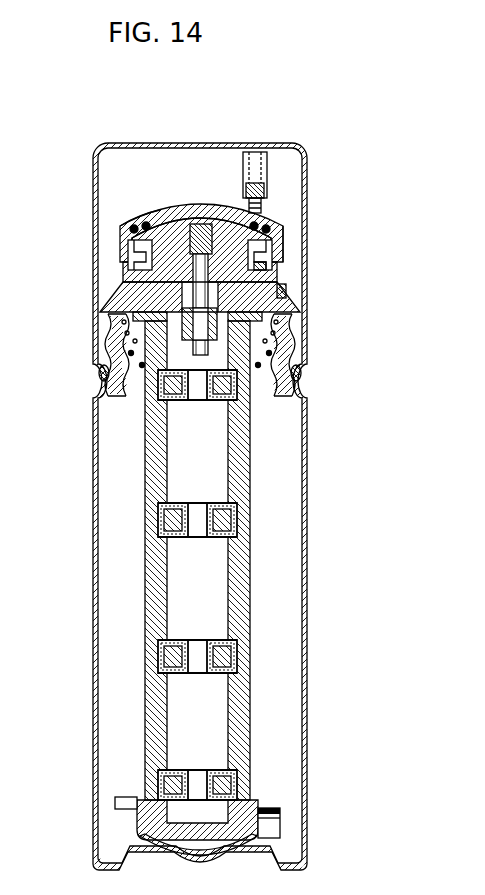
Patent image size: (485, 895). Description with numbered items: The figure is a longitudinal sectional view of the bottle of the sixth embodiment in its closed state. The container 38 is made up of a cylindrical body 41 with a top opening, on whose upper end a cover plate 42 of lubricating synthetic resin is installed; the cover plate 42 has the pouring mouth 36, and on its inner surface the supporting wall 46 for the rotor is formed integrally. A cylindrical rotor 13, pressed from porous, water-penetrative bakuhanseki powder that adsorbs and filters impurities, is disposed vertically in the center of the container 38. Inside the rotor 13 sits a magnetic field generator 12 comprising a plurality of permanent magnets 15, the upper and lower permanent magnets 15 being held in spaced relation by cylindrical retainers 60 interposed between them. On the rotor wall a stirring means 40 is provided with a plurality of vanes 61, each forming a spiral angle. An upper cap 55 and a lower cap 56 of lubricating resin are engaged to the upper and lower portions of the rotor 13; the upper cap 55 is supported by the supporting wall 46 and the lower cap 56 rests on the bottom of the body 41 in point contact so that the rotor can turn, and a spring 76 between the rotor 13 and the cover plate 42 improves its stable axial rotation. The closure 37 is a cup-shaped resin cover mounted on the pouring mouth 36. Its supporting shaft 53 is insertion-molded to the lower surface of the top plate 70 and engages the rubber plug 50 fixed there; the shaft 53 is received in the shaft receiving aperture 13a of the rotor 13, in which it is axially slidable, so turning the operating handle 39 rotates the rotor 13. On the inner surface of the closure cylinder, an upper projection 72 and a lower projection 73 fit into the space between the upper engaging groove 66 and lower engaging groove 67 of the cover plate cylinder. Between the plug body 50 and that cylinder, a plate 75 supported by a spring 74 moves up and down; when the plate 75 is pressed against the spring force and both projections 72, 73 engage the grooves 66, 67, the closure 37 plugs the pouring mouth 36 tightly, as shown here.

The magnetic field generator 12 is at (222, 686).
The cylindrical rotor 13 is at (235, 506).
The shaft receiving aperture 13a is at (133, 342).
The permanent magnets 15 is at (240, 392).
The pouring mouth 36 is at (120, 290).
The closure 37 is at (283, 222).
The container 38 is at (260, 506).
The operating handle 39 is at (268, 160).
The stirring means 40 is at (269, 823).
The cylindrical body 41 is at (303, 482).
The cover plate 42 is at (303, 372).
The supporting wall 46 is at (110, 320).
The rubber plug 50 is at (168, 217).
The supporting shaft 53 is at (198, 222).
The upper cap 55 is at (298, 340).
The lower cap 56 is at (262, 836).
The cylindrical retainers 60 is at (150, 578).
The vanes 61 is at (225, 798).
The upper engaging groove 66 is at (130, 256).
The lower engaging groove 67 is at (283, 290).
The top plate 70 is at (218, 208).
The upper projection 72 is at (272, 248).
The lower projection 73 is at (272, 266).
The spring 74 is at (138, 226).
The plate 75 is at (147, 212).
The spring 76 is at (138, 368).